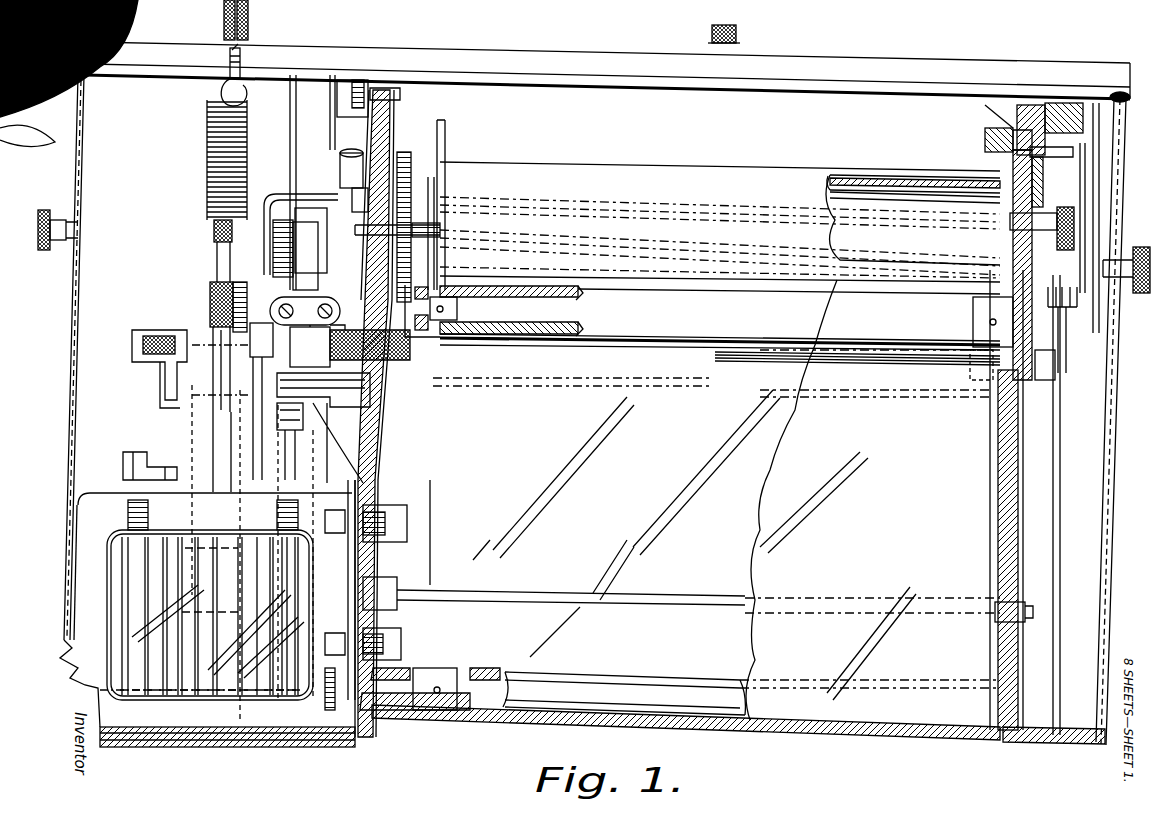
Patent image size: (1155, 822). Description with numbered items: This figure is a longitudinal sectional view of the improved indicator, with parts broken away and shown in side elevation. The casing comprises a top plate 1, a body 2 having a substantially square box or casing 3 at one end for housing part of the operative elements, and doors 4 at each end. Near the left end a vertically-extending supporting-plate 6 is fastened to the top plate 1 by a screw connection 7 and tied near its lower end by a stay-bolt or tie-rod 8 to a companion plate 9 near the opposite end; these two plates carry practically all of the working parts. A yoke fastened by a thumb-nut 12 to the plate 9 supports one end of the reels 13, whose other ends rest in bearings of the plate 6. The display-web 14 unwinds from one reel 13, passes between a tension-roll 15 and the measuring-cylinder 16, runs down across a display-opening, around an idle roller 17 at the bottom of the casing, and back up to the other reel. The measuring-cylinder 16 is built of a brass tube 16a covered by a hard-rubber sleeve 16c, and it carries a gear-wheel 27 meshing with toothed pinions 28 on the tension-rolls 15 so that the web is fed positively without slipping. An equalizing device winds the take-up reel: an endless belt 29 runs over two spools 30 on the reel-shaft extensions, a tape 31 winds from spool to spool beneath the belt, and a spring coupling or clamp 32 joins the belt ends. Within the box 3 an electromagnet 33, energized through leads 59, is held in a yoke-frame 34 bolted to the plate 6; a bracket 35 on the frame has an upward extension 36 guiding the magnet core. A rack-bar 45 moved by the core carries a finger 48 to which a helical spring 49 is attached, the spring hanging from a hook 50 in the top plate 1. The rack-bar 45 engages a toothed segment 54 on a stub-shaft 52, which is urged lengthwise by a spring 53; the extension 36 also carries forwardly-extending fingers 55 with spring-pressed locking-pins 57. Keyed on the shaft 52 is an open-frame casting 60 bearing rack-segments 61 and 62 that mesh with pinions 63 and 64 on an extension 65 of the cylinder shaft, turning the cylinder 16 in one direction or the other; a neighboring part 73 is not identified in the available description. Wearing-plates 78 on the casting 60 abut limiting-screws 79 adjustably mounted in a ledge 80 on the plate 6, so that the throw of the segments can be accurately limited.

The top plate 1 is at (497, 54).
The body 2 is at (496, 722).
The box or casing 3 is at (326, 748).
The doors 4 is at (80, 292).
The supporting-plate 6 is at (383, 452).
The screw 7 is at (340, 116).
The stay-bolt or tie-rod 8 is at (640, 604).
The companion plate 9 is at (1010, 518).
The thumb-nut 12 is at (1086, 220).
The reels 13 is at (445, 142).
The display-web 14 is at (716, 441).
The tension-rolls 15 is at (549, 343).
The measuring-cylinder 16 is at (850, 195).
The brass tube 16a is at (893, 180).
The hard-rubber sleeve 16c is at (833, 180).
The idle roller 17 is at (690, 685).
The gear-wheel 27 is at (403, 152).
The toothed pinions 28 is at (410, 340).
The endless belt 29 is at (1012, 172).
The spools 30 is at (1099, 332).
The tape 31 is at (1010, 178).
The spring coupling or clamp 32 is at (1063, 310).
The electromagnet 33 is at (140, 580).
The yoke-frame 34 is at (98, 540).
The bracket 35 is at (123, 470).
The upward extension 36 is at (238, 445).
The rack-bar 45 is at (213, 290).
The laterally-projecting finger 48 is at (214, 236).
The helical spring 49 is at (207, 178).
The hook 50 is at (220, 92).
The stub-shaft 52 is at (275, 325).
The spring 53 is at (366, 366).
The toothed segment 54 is at (212, 300).
The forwardly-extending fingers 55 is at (166, 376).
The spring-pressed locking-pin 57 is at (253, 312).
The leads 59 is at (222, 28).
The open-frame casting 60 is at (276, 198).
The rack-segment 61 is at (392, 200).
The rack-segment 62 is at (288, 248).
The pinion 63 is at (334, 190).
The smaller pinion 64 is at (273, 249).
The shaft extension 65 is at (410, 222).
The block 73 is at (305, 212).
The wearing-plates 78 is at (350, 346).
The limiting-screws 79 is at (292, 430).
The ledge 80 is at (319, 418).